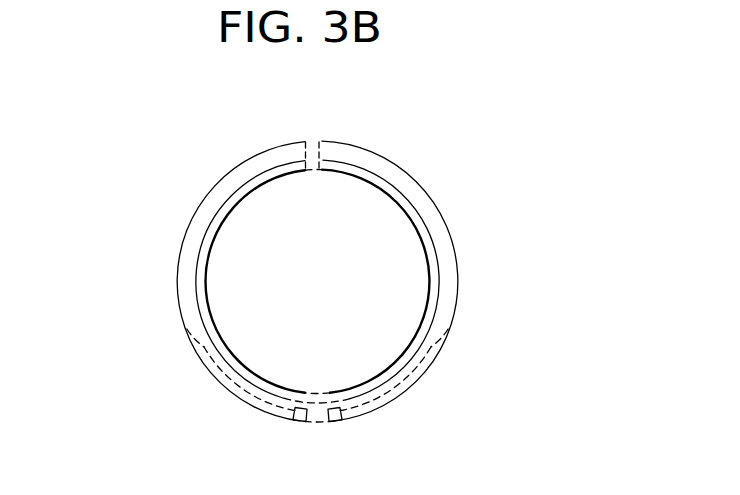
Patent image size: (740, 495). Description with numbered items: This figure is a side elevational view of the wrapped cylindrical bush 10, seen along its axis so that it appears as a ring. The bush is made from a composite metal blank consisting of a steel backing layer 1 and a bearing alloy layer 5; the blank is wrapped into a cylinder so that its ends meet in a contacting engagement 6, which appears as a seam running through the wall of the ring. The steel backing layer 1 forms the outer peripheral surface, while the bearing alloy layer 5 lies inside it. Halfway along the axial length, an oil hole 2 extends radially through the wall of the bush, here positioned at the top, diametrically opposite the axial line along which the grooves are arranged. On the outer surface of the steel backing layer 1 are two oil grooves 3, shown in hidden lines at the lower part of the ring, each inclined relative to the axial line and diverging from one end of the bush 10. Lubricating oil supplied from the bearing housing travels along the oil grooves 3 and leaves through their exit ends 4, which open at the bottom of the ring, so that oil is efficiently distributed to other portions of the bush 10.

The wrapped cylindrical bush 10 is at (417, 175).
The steel backing layer 1 is at (445, 305).
The contacting engagement 6 is at (415, 230).
The bearing alloy layer 5 is at (200, 264).
The oil hole 2 is at (305, 157).
The oil grooves 3 is at (213, 378).
The exit ends 4 is at (299, 424).